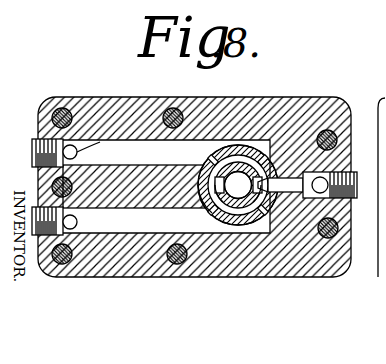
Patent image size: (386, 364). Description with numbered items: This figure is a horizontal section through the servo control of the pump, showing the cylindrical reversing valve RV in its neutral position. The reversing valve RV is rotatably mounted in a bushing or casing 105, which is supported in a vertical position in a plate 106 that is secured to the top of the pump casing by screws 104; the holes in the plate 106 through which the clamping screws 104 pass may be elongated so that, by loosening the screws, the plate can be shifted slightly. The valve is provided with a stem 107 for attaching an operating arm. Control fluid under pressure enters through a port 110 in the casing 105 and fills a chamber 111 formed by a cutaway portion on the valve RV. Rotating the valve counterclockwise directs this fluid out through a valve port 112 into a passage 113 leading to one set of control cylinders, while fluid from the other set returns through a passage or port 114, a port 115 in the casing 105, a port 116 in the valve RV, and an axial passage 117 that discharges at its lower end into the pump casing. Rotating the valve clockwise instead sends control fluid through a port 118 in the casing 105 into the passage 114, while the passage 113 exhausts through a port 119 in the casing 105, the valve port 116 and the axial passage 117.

The screws 104 is at (53, 110).
The bushing or casing 105 is at (228, 160).
The plate 106 is at (143, 133).
The stem 107 is at (338, 12).
The port 110 is at (346, 148).
The chamber 111 is at (291, 160).
The valve port 112 is at (286, 143).
The passage 113 is at (146, 147).
The passage or port 114 is at (72, 222).
The port 115 is at (198, 205).
The port 116 is at (218, 198).
The axial passage 117 is at (232, 197).
The port 118 is at (250, 208).
The port 119 is at (210, 157).
The reversing valve RV is at (236, 157).